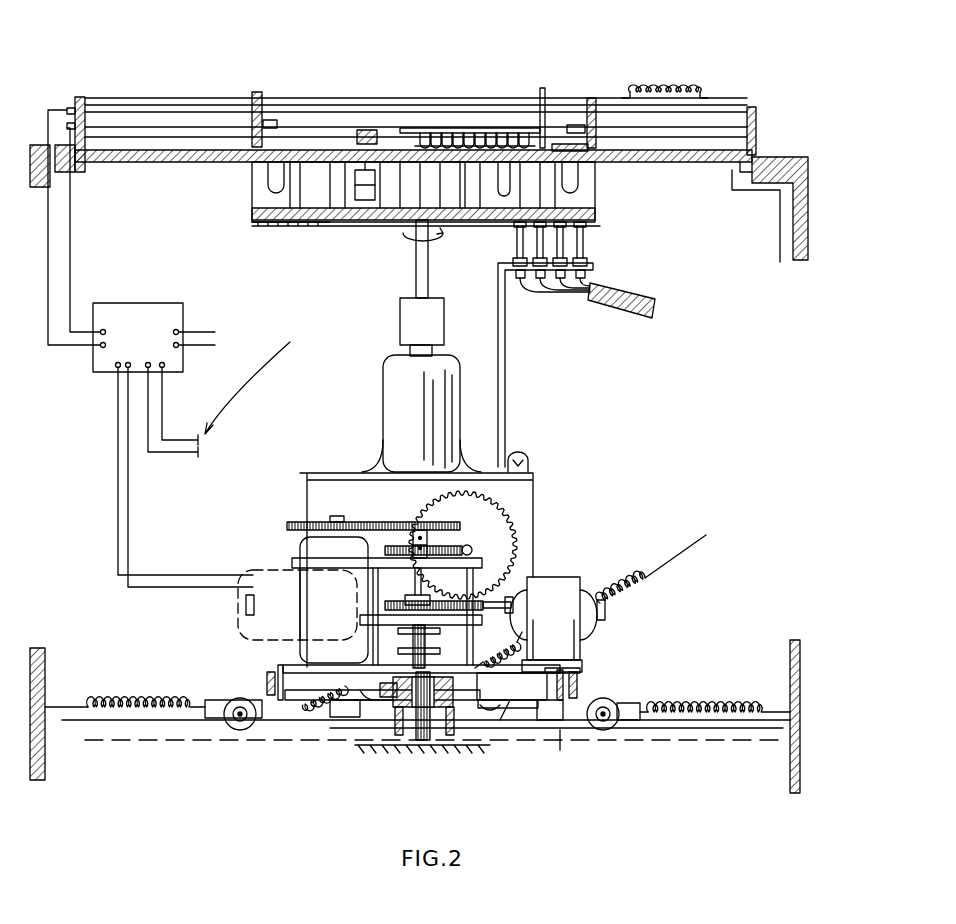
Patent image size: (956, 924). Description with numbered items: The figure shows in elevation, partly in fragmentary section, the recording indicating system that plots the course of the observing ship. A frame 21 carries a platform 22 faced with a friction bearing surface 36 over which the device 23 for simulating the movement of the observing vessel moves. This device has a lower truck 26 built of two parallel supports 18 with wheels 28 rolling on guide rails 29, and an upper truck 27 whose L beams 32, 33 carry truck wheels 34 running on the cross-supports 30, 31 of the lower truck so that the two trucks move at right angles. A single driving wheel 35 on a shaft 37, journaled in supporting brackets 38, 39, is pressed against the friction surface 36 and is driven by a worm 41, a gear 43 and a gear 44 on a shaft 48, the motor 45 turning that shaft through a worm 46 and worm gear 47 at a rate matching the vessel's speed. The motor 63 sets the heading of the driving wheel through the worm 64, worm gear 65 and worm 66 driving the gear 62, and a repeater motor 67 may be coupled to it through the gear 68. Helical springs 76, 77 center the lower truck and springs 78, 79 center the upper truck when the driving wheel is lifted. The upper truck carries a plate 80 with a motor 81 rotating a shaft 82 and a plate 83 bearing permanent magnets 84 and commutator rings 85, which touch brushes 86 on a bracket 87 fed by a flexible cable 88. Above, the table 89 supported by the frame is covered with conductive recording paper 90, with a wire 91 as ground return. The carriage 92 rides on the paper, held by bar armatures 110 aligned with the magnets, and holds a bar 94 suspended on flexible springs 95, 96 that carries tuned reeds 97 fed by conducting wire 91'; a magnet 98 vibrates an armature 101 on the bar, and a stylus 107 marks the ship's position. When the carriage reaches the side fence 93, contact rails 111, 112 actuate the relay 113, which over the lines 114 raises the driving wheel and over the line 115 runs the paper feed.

The parallel supports 18 is at (510, 720).
The frame 21 is at (793, 215).
The platform 22 is at (700, 740).
The device for simulating the movement of the observing vessel 23 is at (580, 700).
The lower truck 26 is at (630, 720).
The upper truck 27 is at (515, 710).
The wheels 28 is at (240, 730).
The guide rails 29 is at (560, 740).
The cross-support 30 is at (563, 705).
The cross-support 31 is at (270, 690).
The L beam 32 is at (290, 700).
The L beam 33 is at (560, 690).
The truck wheels 34 is at (265, 680).
The driving wheel 35 is at (412, 735).
The friction bearing surface 36 is at (455, 735).
The shaft 37 is at (399, 735).
The supporting bracket 38 is at (512, 686).
The supporting bracket 39 is at (393, 700).
The worm 41 is at (432, 740).
The gear 43 is at (490, 708).
The gear 44 is at (393, 700).
The motor 45 is at (255, 630).
The worm 46 is at (385, 605).
The worm gear 47 is at (403, 601).
The shaft 48 is at (425, 640).
The gear 62 is at (450, 545).
The motor 63 is at (545, 590).
The worm 64 is at (487, 617).
The worm gear 65 is at (473, 552).
The worm 66 is at (517, 548).
The repeater motor 67 is at (300, 545).
The gear 68 is at (305, 522).
The helical spring 76 is at (680, 710).
The helical spring 77 is at (160, 702).
The spring 78 is at (645, 580).
The spring 79 is at (305, 706).
The plate 80 is at (330, 473).
The motor 81 is at (390, 420).
The shaft 82 is at (428, 270).
The plate 83 is at (465, 208).
The permanent magnets 84 is at (255, 192).
The commutator rings 85 is at (520, 230).
The brushes 86 is at (590, 256).
The bracket 87 is at (505, 350).
The flexible cable 88 is at (650, 312).
The table 89 is at (700, 163).
The recording paper 90 is at (680, 150).
The wire 91 is at (749, 216).
The conducting wire 91' is at (522, 103).
The carriage 92 is at (622, 96).
The side fence 93 is at (757, 116).
The bar 94 is at (395, 130).
The flexible spring 95 is at (288, 122).
The flexible spring 96 is at (565, 144).
The reeds 97 is at (500, 140).
The magnet 98 is at (355, 182).
The armature 101 is at (366, 130).
The stylus 107 is at (428, 142).
The bar armatures 110 is at (575, 128).
The contact rail 111 is at (150, 130).
The contact rail 112 is at (195, 108).
The relay 113 is at (128, 303).
The lines 114 is at (130, 505).
The line 115 is at (162, 420).